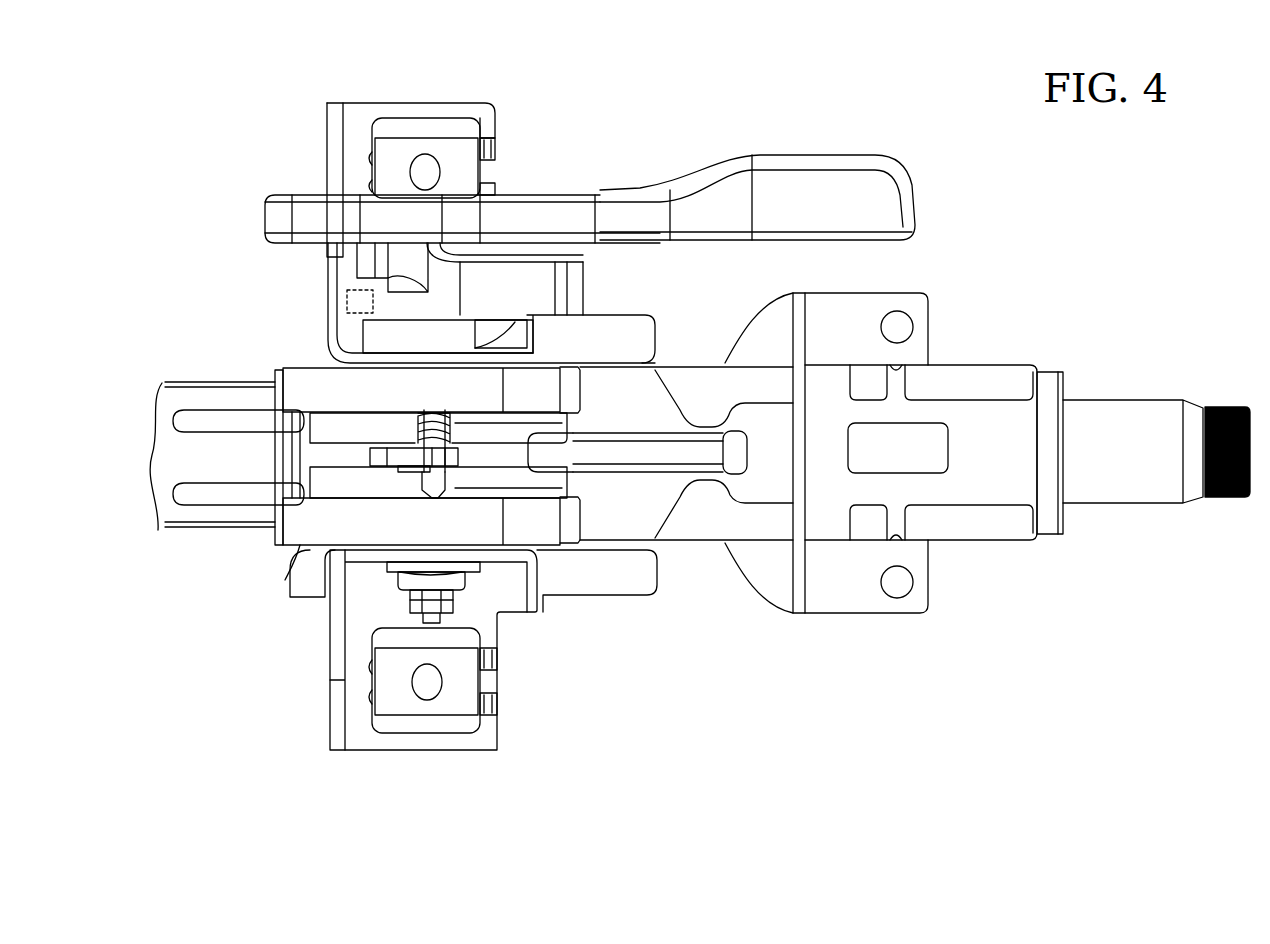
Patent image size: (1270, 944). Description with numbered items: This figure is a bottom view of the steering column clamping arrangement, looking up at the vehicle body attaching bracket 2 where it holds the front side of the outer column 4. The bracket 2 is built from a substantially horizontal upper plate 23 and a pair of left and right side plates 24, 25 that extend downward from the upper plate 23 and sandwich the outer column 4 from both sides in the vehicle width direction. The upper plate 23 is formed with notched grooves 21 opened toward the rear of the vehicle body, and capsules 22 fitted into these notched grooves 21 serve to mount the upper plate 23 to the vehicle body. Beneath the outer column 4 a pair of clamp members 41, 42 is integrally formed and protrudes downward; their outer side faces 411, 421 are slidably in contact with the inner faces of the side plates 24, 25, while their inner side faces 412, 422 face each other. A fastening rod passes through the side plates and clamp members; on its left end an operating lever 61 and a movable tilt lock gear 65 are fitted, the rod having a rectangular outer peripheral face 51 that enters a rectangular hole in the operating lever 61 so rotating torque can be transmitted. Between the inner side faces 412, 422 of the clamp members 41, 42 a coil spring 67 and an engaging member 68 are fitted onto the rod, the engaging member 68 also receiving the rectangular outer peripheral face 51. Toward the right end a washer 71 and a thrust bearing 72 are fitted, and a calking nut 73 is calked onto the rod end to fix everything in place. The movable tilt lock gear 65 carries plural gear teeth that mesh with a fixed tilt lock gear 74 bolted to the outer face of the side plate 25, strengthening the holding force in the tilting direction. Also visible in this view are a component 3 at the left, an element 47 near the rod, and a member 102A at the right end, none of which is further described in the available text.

The vehicle body attaching bracket 2 is at (452, 90).
The rod 3 is at (162, 393).
The outer column 4 is at (995, 380).
The notched grooves 21 is at (499, 148).
The capsules 22 is at (401, 123).
The upper plate 23 is at (357, 735).
The side plate 24 is at (593, 592).
The side plate 25 is at (628, 331).
The clamp member 41 is at (297, 546).
The clamp member 42 is at (293, 378).
The link rod 47 is at (691, 462).
The rectangular outer peripheral face 51 is at (425, 484).
The operating lever 61 is at (822, 182).
The movable tilt lock gear 65 is at (574, 259).
The spring 67 is at (416, 431).
The engaging member 68 is at (382, 457).
The washer 71 is at (445, 562).
The thrust bearing 72 is at (416, 566).
The calking nut 73 is at (424, 605).
The fixed tilt lock gear 74 is at (417, 341).
The knob shaft 102A is at (1151, 419).
The outer side face 411 is at (326, 548).
The inner side face 412 is at (300, 492).
The outer side face 421 is at (320, 362).
The inner side face 422 is at (300, 421).